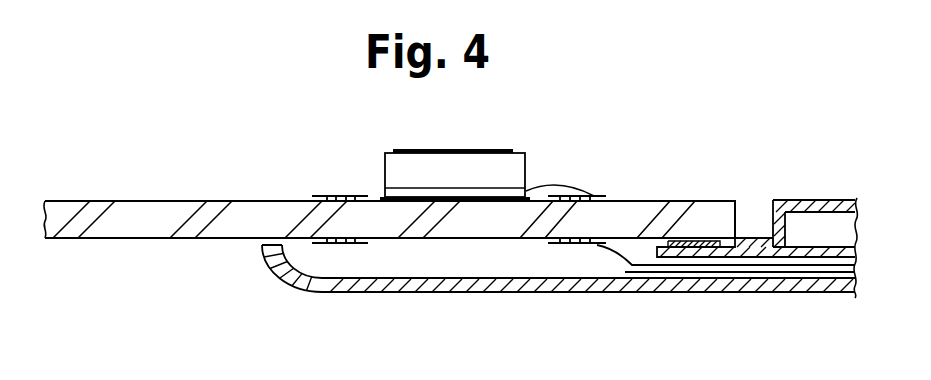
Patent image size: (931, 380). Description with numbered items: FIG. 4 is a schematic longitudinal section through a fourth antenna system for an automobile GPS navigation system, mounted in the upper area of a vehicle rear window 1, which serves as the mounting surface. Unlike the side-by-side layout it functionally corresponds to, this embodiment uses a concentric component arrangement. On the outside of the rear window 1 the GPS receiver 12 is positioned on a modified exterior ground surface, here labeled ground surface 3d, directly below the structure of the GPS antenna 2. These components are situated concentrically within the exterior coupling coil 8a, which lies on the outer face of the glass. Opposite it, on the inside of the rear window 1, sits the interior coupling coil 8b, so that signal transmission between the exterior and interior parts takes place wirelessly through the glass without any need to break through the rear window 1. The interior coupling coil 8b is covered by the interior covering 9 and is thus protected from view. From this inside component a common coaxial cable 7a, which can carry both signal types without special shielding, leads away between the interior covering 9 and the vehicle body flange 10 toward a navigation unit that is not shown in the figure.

The vehicle rear window 1 is at (126, 228).
The GPS antenna 2 is at (450, 162).
The bonding layer 3d is at (382, 198).
The coaxial cable 7a is at (625, 272).
The exterior coupling coil 8a is at (342, 196).
The interior coupling coil 8b is at (342, 244).
The interior covering 9 is at (270, 258).
The vehicle body flange 10 is at (767, 249).
The GPS receiver 12 is at (500, 186).